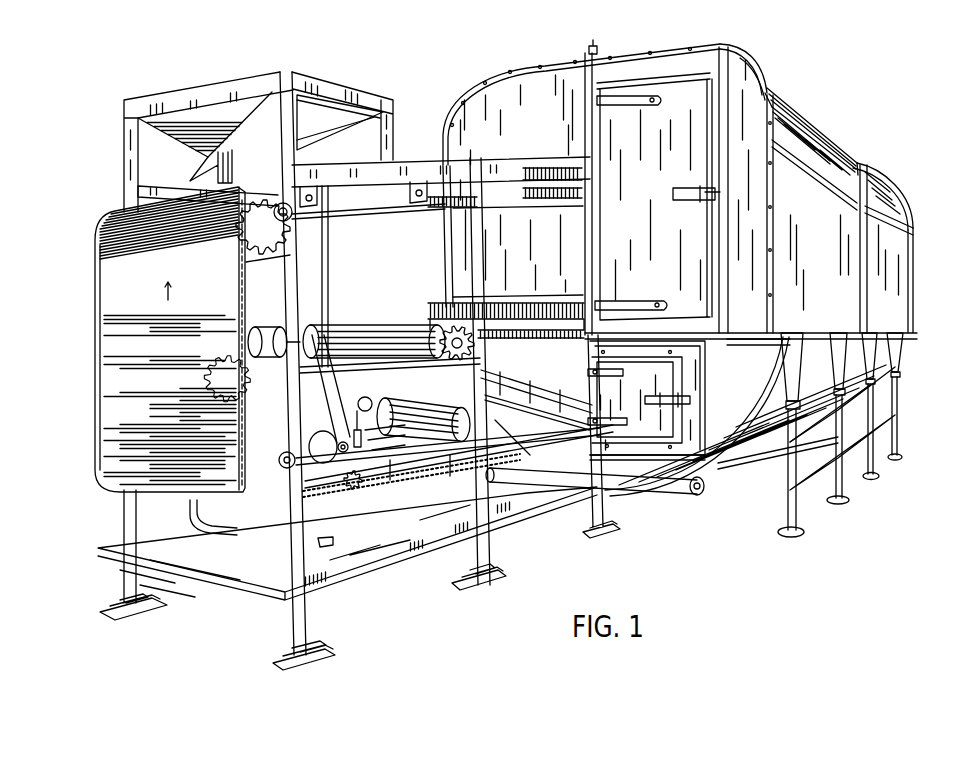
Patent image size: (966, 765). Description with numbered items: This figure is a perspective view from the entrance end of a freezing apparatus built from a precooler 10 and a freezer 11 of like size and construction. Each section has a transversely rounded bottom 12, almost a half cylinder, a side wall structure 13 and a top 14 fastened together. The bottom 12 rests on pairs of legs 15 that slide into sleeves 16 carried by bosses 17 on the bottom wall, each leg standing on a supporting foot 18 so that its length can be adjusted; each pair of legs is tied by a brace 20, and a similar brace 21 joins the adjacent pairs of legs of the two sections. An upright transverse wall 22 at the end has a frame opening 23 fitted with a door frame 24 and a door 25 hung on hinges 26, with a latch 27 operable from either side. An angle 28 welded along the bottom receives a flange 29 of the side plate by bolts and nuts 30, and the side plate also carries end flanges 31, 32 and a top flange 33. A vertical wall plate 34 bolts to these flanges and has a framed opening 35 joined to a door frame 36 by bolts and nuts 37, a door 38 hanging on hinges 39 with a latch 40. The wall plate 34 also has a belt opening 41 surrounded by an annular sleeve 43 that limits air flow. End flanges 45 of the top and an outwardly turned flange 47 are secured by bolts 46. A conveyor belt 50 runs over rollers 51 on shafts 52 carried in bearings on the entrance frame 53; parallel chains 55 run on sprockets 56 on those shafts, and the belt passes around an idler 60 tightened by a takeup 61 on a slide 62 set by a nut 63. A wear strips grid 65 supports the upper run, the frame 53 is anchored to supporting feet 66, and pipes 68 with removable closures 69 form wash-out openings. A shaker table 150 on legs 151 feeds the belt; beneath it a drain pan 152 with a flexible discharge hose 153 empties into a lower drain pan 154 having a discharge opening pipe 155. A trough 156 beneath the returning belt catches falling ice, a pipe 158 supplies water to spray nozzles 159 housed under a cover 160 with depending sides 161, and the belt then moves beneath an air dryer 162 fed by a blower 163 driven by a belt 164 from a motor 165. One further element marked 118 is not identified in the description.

The precooler 10 is at (822, 86).
The freezer 11 is at (883, 132).
The bottom 12 is at (752, 442).
The side wall structure 13 is at (826, 266).
The top 14 is at (818, 117).
The legs 15 is at (798, 446).
The sleeves 16 is at (797, 408).
The bosses 17 is at (800, 374).
The supporting foot 18 is at (806, 527).
The brace 20 is at (797, 492).
The brace 21 is at (846, 457).
The upright transverse wall 22 is at (611, 489).
The frame opening 23 is at (707, 362).
The door frame 24 is at (690, 425).
The door 25 is at (623, 452).
The hinges 26 is at (599, 378).
The latch 27 is at (657, 396).
The angle 28 is at (785, 339).
The flange 29 is at (793, 333).
The bolts and nuts 30 is at (840, 333).
The end flange 31 is at (776, 220).
The end flange 32 is at (858, 230).
The top flange 33 is at (827, 183).
The vertical wall plate 34 is at (549, 134).
The framed opening 35 is at (731, 42).
The door frame 36 is at (729, 246).
The bolts and nuts 37 is at (716, 111).
The door 38 is at (656, 238).
The hinges 39 is at (622, 108).
The latch 40 is at (688, 190).
The belt opening 41 is at (437, 214).
The annular sleeve 43 is at (560, 172).
The end flange 45 is at (748, 60).
The bolts 46 is at (650, 57).
The outwardly turned flange 47 is at (835, 155).
The conveyor belt 50 is at (118, 216).
The rollers 51 is at (410, 408).
The shafts 52 is at (293, 216).
The frame 53 is at (491, 267).
The chains 55 is at (108, 303).
The sprockets 56 is at (262, 198).
The idler 60 is at (430, 322).
The takeup 61 is at (512, 405).
The slide 62 is at (558, 414).
The nut 63 is at (515, 432).
The wear strips grid 65 is at (348, 181).
The supporting feet 66 is at (322, 657).
The pipes 68 is at (666, 494).
The removable closures 69 is at (705, 490).
The hinge bracket 118 is at (598, 48).
The shaker table 150 is at (335, 85).
The legs 151 is at (383, 128).
The drain pan 152 is at (207, 107).
The flexible discharge hose 153 is at (196, 171).
The drain pan 154 is at (247, 575).
The discharge opening pipe 155 is at (318, 538).
The trough 156 is at (337, 381).
The pipe 158 is at (376, 393).
The spray nozzles 159 is at (393, 440).
The cover 160 is at (315, 433).
The depending sides 161 is at (378, 490).
The air dryer 162 is at (338, 485).
The blower 163 is at (336, 447).
The belt 164 is at (320, 350).
The motor 165 is at (276, 318).